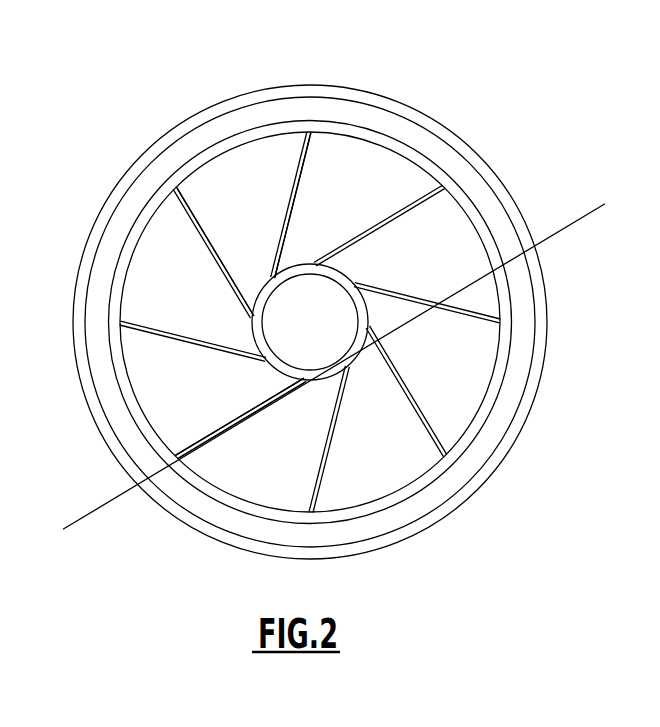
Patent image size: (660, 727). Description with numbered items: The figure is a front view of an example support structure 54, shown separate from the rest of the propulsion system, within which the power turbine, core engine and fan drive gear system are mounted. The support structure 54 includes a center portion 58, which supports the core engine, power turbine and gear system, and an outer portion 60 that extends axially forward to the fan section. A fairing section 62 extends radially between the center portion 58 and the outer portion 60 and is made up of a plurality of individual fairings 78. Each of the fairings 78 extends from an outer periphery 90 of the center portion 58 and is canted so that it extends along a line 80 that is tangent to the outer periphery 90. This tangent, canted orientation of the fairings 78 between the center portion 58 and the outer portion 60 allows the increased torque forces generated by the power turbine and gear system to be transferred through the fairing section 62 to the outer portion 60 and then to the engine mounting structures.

The support structure 54 is at (310, 289).
The center portion 58 is at (364, 350).
The outer portion 60 is at (480, 192).
The fairing section 62 is at (235, 176).
The fairings 78 is at (190, 232).
The line 80 is at (88, 514).
The outer periphery 90 is at (313, 387).